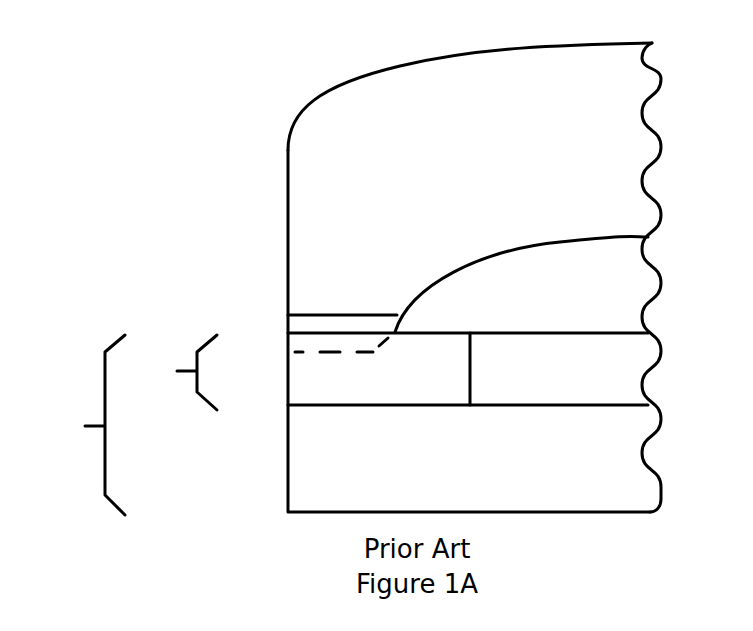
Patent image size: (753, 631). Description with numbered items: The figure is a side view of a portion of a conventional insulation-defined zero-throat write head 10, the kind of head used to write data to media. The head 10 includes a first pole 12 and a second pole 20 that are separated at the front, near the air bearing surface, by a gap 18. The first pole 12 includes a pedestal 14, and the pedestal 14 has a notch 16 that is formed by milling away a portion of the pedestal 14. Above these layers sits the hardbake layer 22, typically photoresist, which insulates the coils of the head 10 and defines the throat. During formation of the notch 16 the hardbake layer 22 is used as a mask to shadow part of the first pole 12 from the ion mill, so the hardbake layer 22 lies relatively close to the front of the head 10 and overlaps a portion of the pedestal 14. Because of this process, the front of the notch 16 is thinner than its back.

The insulation-defined zero-throat (IDZT) write head 10 is at (428, 20).
The first pole (P1) 12 is at (344, 424).
The pedestal 14 is at (173, 372).
The notch 16 is at (285, 345).
The gap 18 is at (287, 323).
The second pole (P2) 20 is at (286, 243).
The hardbake layer 22 is at (664, 296).